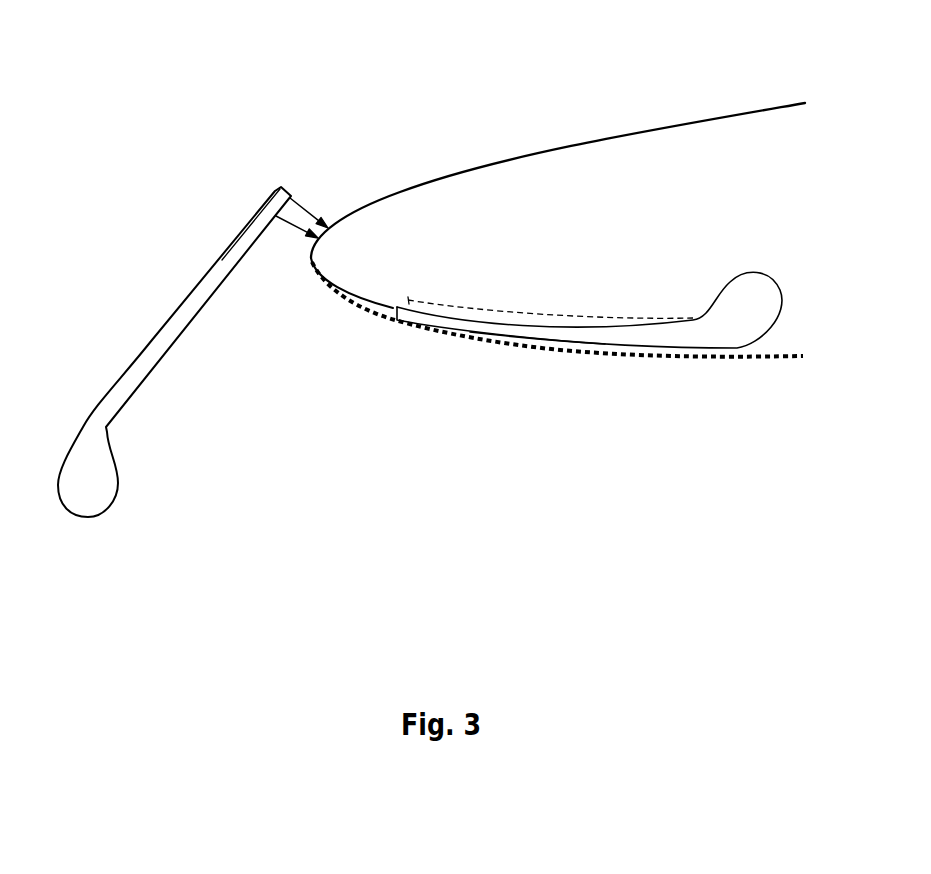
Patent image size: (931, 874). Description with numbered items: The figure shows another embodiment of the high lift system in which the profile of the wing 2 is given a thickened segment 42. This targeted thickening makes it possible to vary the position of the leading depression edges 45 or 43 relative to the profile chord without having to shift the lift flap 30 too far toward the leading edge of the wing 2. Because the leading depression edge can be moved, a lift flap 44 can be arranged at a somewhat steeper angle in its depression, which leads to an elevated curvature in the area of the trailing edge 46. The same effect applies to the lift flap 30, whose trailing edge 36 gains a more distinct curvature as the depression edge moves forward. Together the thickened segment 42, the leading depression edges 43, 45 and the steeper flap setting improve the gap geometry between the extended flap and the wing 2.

The wing 2 is at (645, 110).
The lift flap 30 is at (532, 318).
The trailing edge 36 is at (276, 190).
The thickened segment 42 is at (375, 318).
The leading depression edge 43 is at (391, 291).
The lift flap 44 is at (150, 342).
The leading depression edge 45 is at (379, 300).
The trailing edge 46 is at (290, 197).